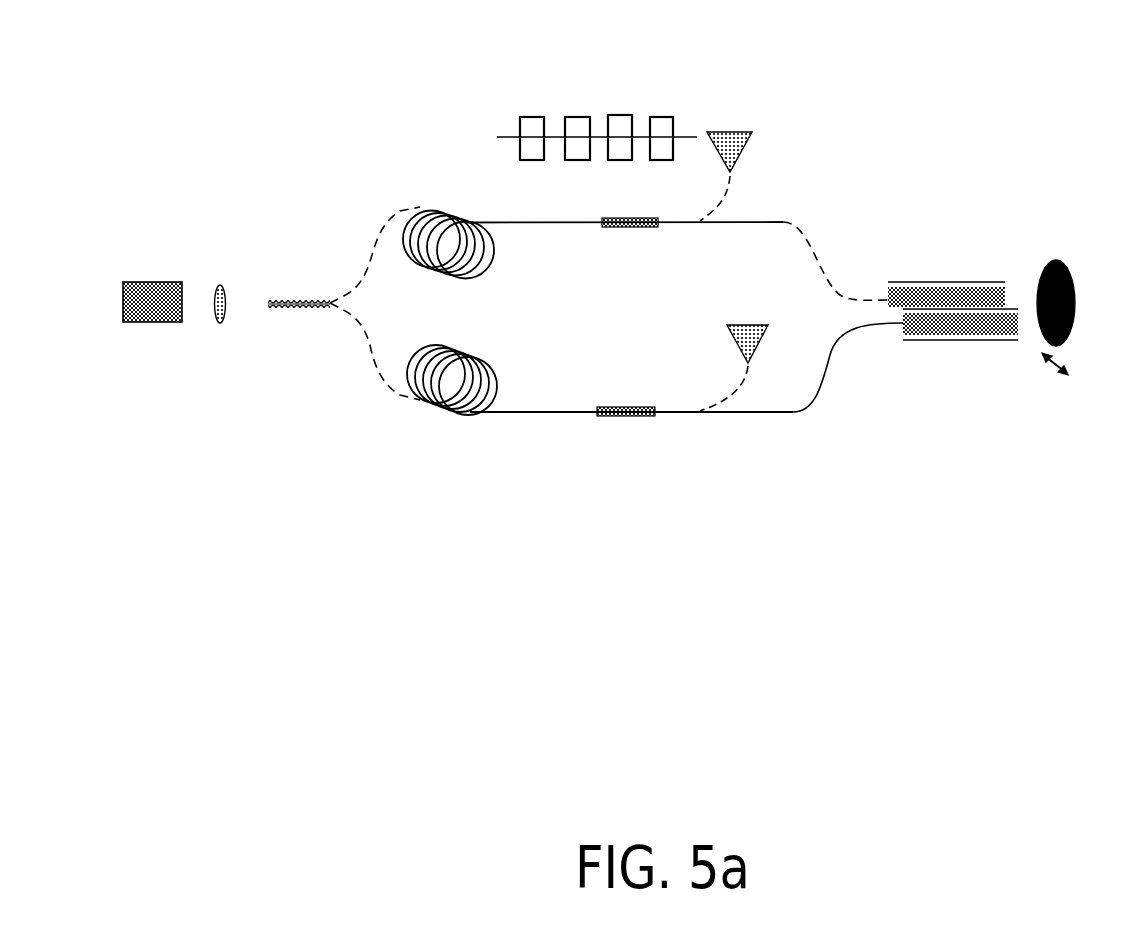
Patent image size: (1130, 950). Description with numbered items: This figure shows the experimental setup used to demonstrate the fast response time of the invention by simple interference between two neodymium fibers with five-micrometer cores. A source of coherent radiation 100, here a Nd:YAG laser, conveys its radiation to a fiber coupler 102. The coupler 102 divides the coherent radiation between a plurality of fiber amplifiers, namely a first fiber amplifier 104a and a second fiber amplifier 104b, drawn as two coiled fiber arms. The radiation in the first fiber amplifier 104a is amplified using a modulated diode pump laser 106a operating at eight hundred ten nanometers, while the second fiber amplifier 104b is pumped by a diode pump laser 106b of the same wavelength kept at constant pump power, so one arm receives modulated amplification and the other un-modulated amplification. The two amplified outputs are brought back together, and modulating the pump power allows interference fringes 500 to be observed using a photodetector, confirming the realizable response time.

The source of coherent radiation 100 is at (147, 273).
The fiber coupler 102 is at (293, 261).
The first fiber amplifier 104a is at (593, 245).
The second fiber amplifier 104b is at (600, 425).
The modulated diode pump laser 106a is at (646, 122).
The diode pump laser 106b is at (735, 399).
The interference fringes 500 is at (1061, 276).